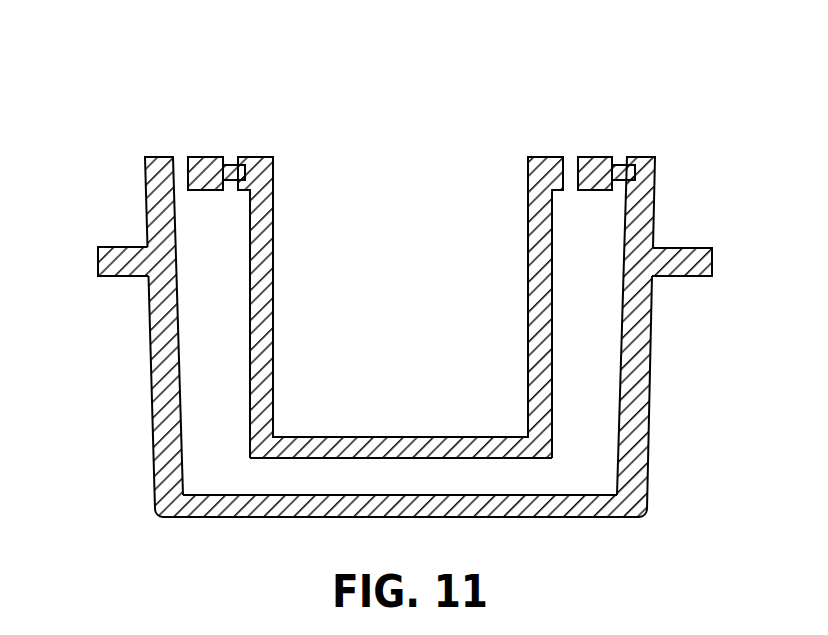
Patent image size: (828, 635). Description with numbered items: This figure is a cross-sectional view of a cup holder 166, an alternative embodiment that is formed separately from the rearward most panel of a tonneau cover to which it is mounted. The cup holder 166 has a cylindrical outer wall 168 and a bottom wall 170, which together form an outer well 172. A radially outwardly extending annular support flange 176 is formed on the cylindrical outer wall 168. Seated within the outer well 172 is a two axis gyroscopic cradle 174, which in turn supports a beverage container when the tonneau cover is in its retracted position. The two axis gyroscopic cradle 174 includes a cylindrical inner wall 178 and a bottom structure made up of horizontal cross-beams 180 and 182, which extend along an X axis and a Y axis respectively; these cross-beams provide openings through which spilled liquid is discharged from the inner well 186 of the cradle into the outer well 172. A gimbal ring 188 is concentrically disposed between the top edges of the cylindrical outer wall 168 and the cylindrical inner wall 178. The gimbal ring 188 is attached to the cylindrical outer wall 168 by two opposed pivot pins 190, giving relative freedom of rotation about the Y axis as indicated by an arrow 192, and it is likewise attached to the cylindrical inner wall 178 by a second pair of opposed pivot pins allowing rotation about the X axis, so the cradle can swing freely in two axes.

The cup holder 166 is at (398, 317).
The cylindrical outer wall 168 is at (163, 330).
The bottom wall 170 is at (300, 517).
The outer well 172 is at (588, 367).
The two axis gyroscopic cradle 174 is at (518, 161).
The annular support flange 176 is at (685, 248).
The cylindrical inner wall 178 is at (263, 280).
The horizontal cross-beam 180 is at (282, 446).
The horizontal cross-beam 182 is at (425, 445).
The inner well 186 is at (323, 395).
The gimbal ring 188 is at (197, 156).
The pivot pins 190 is at (621, 156).
The arrow 192 is at (229, 156).